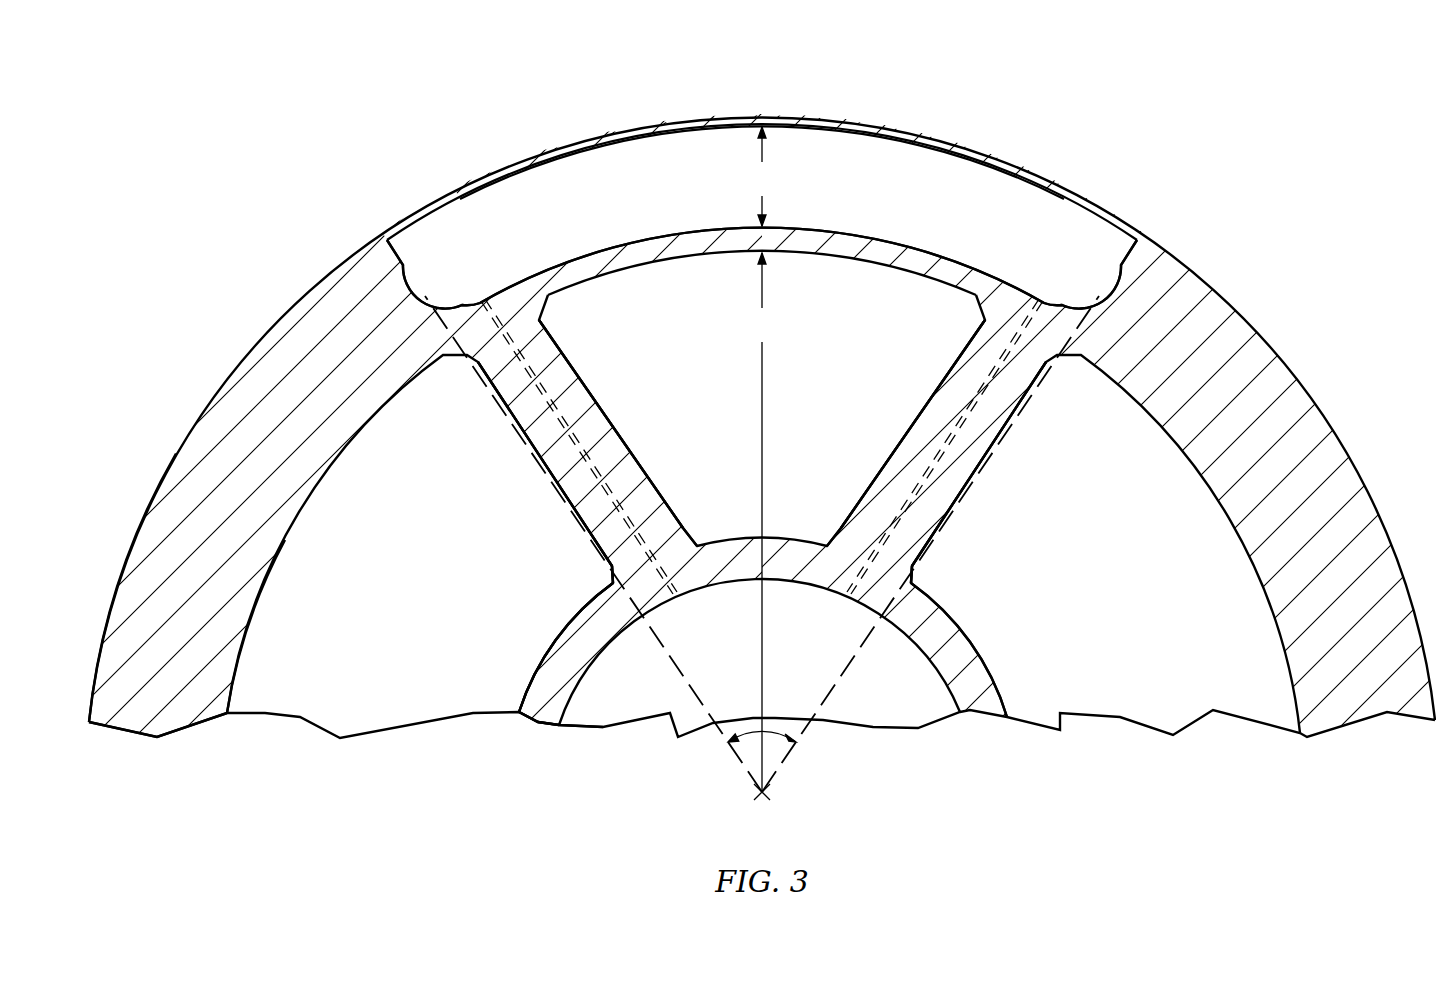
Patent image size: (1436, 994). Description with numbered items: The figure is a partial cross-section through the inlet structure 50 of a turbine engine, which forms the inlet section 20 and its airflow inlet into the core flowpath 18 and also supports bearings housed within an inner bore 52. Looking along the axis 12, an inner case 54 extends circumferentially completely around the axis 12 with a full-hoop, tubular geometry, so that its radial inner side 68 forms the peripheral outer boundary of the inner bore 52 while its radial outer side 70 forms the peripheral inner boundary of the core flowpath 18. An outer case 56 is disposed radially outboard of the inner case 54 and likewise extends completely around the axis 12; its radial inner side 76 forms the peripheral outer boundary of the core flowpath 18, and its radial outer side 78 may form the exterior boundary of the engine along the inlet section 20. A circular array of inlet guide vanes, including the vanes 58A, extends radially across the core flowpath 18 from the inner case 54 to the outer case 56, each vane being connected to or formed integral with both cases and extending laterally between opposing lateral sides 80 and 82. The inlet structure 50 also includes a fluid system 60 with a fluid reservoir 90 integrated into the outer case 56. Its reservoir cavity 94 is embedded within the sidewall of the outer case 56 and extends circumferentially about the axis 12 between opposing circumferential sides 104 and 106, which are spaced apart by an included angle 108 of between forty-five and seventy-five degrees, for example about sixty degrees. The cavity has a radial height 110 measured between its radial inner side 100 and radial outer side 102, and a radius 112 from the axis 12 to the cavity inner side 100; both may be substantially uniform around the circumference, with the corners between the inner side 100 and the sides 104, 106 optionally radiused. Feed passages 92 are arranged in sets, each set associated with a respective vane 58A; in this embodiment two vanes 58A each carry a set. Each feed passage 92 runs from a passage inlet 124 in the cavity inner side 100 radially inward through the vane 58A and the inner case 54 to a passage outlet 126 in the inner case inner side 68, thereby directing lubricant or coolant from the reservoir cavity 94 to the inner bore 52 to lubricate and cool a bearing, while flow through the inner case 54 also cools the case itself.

The axis 12 is at (775, 795).
The core flowpath 18 is at (710, 396).
The inlet section 20 is at (1243, 140).
The inlet structure 50 is at (762, 404).
The inner bore 52 is at (719, 696).
The inner case 54 is at (532, 738).
The outer case 56 is at (157, 748).
The stationary vane 58A is at (528, 455).
The fluid system 60 is at (1007, 200).
The radial inner side of the inner case 68 is at (570, 703).
The radial outer side of the inner case 70 is at (524, 690).
The radial inner side of the outer case 76 is at (232, 692).
The radial outer side of the outer case 78 is at (100, 643).
The lateral side of the vane 80 is at (568, 497).
The lateral side of the vane 82 is at (652, 473).
The fluid reservoir 90 is at (968, 138).
The feed passage 92 is at (578, 416).
The reservoir cavity 94 is at (859, 199).
The radial inner side of the reservoir cavity 100 is at (633, 242).
The radial outer side of the reservoir cavity 102 is at (662, 134).
The circumferential side of the reservoir cavity 104 is at (412, 250).
The circumferential side of the reservoir cavity 106 is at (1112, 250).
The included angle 108 is at (780, 712).
The radial height 110 is at (762, 176).
The radius 112 is at (762, 522).
The passage inlet 124 is at (483, 300).
The passage outlet 126 is at (679, 585).